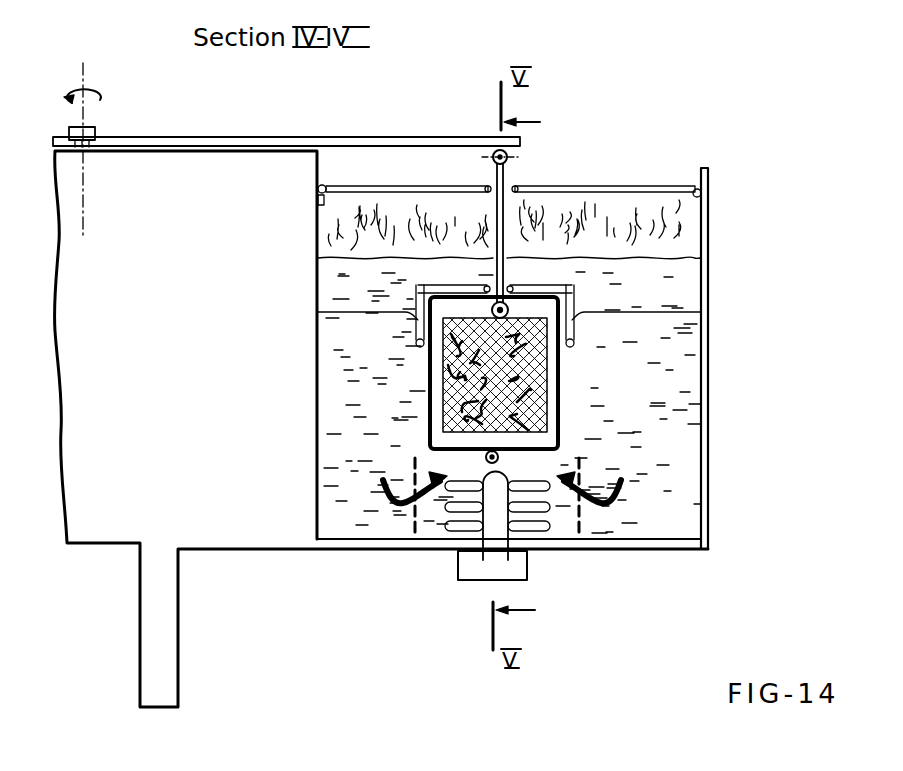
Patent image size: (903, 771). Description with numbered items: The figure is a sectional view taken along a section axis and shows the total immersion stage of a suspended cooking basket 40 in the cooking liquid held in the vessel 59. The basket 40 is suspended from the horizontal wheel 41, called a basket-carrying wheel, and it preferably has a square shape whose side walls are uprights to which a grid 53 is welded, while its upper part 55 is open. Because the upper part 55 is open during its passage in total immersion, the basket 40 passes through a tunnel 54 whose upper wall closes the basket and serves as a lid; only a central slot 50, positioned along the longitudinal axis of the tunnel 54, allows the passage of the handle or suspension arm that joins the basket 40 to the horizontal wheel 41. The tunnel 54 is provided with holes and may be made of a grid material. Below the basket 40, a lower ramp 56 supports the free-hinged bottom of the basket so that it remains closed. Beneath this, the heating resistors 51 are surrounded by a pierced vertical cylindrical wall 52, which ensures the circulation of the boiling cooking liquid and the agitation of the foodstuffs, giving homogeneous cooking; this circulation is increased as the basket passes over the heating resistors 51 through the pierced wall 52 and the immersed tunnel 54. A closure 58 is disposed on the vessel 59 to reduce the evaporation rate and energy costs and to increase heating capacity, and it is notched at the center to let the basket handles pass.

The horizontal wheel 41 is at (256, 137).
The closure 58 is at (529, 188).
The central slot 50 is at (505, 267).
The upper part of the basket 55 is at (540, 286).
The vessel 59 is at (709, 228).
The tunnel 54 is at (576, 296).
The grid 53 is at (558, 363).
The basket 40 is at (520, 415).
The pierced vertical cylindrical wall 52 is at (580, 460).
The lower ramp 56 is at (490, 465).
The heating resistors 51 is at (530, 528).